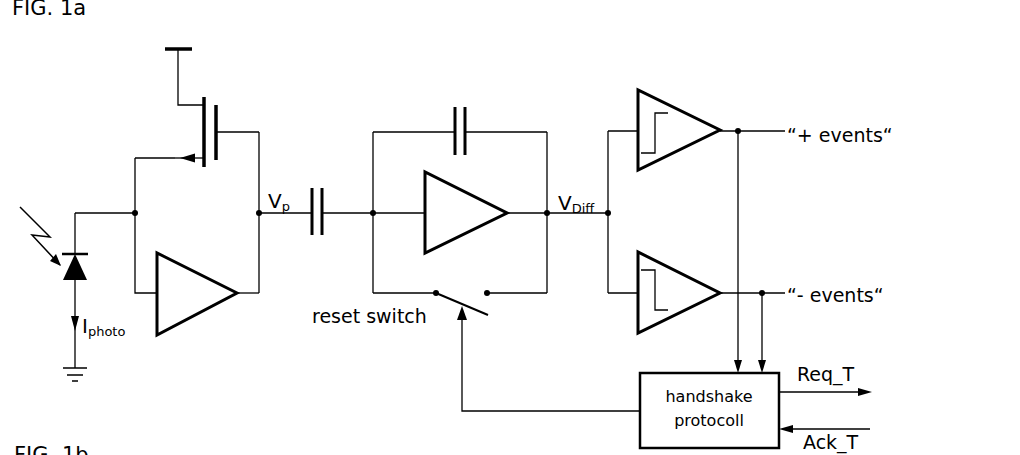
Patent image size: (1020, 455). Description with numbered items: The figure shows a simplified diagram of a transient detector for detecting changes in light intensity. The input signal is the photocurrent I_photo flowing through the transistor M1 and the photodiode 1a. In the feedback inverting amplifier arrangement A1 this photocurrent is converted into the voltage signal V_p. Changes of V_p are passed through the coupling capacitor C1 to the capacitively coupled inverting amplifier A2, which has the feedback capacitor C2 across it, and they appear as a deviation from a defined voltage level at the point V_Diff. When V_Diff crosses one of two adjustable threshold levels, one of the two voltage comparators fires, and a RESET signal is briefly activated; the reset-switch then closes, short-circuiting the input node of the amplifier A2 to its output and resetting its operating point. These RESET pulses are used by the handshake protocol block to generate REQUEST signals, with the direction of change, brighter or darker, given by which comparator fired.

The photodiode 1a is at (54, 261).
The transistor M1 is at (206, 132).
The feedback inverting amplifier arrangement A1 is at (197, 294).
The capacitively coupled inverting amplifier A2 is at (466, 212).
The capacitor C1 is at (317, 229).
The capacitor C2 is at (460, 114).